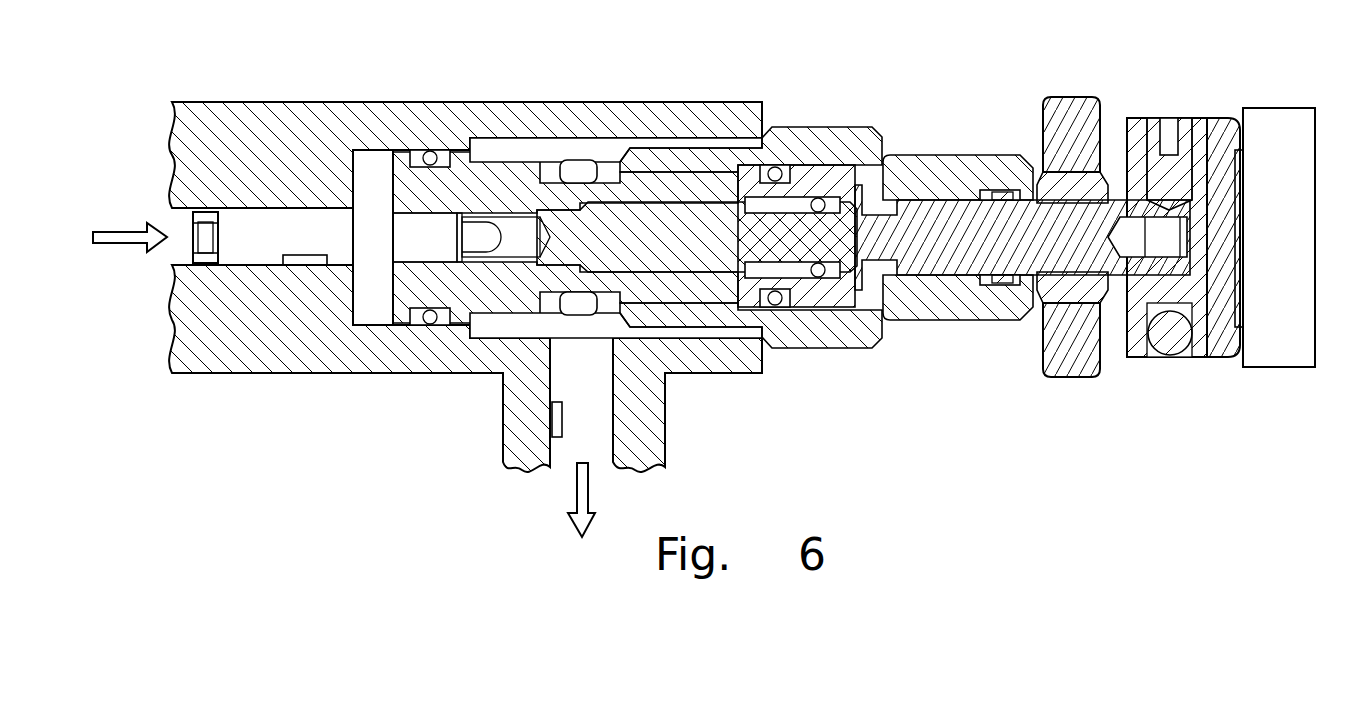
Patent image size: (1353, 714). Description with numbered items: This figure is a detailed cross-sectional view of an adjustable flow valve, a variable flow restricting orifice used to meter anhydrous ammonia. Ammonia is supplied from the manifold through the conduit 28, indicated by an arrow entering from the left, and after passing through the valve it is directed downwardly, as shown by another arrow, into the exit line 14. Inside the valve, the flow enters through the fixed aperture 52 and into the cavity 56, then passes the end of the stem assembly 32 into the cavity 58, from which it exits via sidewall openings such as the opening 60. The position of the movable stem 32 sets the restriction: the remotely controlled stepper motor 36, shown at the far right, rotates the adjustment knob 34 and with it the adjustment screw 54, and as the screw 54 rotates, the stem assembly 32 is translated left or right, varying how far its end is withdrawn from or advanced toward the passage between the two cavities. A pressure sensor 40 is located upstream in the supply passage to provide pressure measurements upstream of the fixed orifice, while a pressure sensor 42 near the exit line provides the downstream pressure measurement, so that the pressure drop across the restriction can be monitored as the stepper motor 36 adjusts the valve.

The exit line 14 is at (653, 418).
The conduit 28 is at (258, 117).
The stem assembly 32 is at (635, 213).
The adjustment knob 34 is at (1215, 340).
The stepper motor 36 is at (1280, 353).
The pressure sensor 40 is at (307, 253).
The pressure sensor 42 is at (563, 420).
The fixed aperture 52 is at (190, 257).
The adjustment screw 54 is at (935, 257).
The cavity 56 is at (441, 250).
The cavity 58 is at (563, 282).
The sidewall opening 60 is at (578, 308).